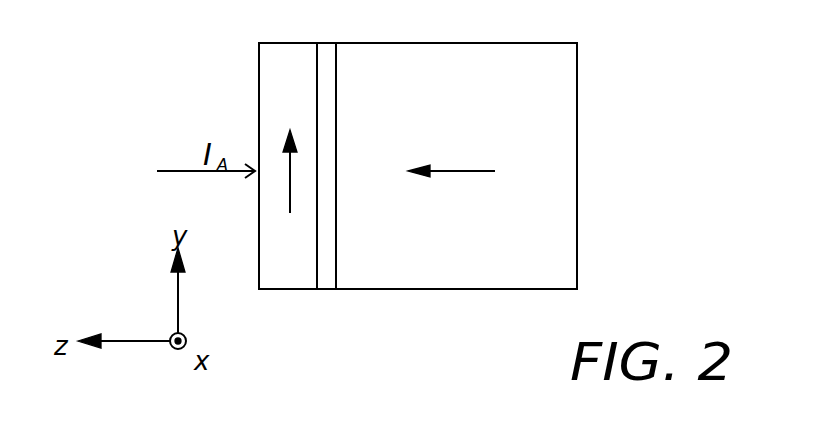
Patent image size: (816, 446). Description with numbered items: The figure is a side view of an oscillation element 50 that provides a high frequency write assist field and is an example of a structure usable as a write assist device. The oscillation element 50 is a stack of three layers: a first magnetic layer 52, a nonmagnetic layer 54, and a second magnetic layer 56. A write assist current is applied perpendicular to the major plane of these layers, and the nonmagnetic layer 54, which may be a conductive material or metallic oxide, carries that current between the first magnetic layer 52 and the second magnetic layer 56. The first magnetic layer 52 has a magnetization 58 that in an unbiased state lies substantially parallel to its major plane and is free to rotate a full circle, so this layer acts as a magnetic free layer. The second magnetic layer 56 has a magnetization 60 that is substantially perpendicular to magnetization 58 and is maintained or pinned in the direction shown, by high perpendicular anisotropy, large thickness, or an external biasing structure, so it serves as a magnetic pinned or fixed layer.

The oscillation element 50 is at (612, 67).
The first magnetic layer 52 is at (292, 275).
The nonmagnetic layer 54 is at (322, 280).
The second magnetic layer 56 is at (467, 275).
The magnetization 58 is at (290, 184).
The magnetization 60 is at (457, 172).